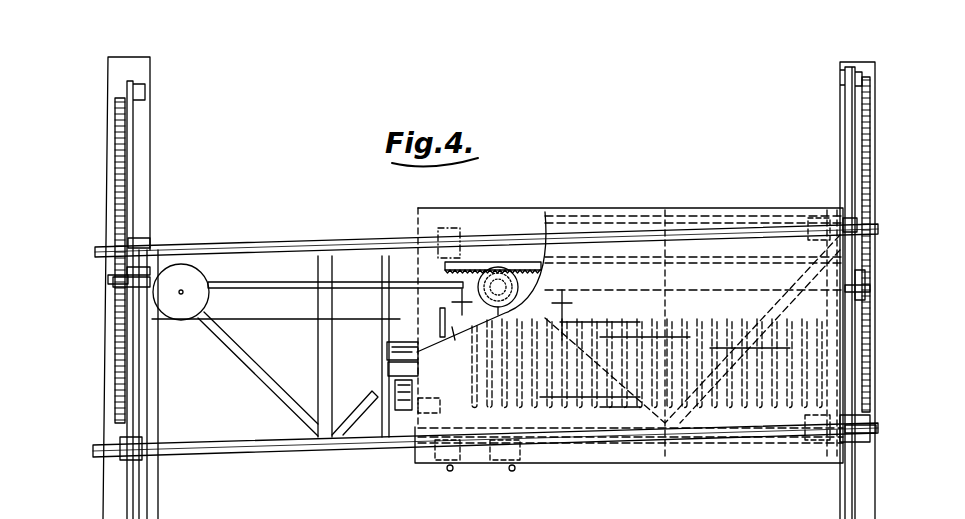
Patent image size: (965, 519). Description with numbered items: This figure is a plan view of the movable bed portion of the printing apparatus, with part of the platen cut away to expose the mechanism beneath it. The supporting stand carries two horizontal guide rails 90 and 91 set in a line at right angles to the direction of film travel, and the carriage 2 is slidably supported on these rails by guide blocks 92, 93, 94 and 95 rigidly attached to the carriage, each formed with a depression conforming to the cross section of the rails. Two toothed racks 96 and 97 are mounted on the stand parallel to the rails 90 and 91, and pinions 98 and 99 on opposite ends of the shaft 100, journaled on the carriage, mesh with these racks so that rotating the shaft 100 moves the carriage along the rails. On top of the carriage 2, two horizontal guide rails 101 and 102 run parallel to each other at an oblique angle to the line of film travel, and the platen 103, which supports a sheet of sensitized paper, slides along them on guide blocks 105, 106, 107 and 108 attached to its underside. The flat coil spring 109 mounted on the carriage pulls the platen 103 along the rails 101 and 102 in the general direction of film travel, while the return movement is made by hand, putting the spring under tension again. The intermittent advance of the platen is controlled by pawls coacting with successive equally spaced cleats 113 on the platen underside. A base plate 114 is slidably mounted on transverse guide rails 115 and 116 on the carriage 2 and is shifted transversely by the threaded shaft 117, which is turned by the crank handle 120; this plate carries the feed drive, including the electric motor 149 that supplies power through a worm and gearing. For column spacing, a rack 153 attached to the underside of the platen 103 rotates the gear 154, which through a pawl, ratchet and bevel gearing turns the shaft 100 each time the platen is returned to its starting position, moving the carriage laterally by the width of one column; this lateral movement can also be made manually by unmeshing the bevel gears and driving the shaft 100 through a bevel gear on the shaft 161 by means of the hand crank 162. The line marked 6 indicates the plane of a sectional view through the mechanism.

The carriage 2 is at (226, 233).
The section line 6 is at (511, 314).
The horizontal guide rail 90 is at (132, 496).
The horizontal guide rail 91 is at (845, 501).
The guide block 92 is at (142, 462).
The guide block 93 is at (143, 240).
The guide block 94 is at (870, 439).
The guide block 95 is at (846, 222).
The toothed rack 96 is at (121, 164).
The toothed rack 97 is at (871, 342).
The pinion 98 is at (114, 279).
The pinion 99 is at (870, 289).
The shaft 100 is at (300, 286).
The horizontal guide rail 101 is at (230, 455).
The horizontal guide rail 102 is at (265, 243).
The platen 103 is at (742, 456).
The guide block 105 is at (452, 462).
The guide block 106 is at (450, 228).
The guide block 107 is at (815, 445).
The guide block 108 is at (805, 212).
The flat coil spring 109 is at (185, 300).
The cleats 113 is at (672, 320).
The base plate 114 is at (386, 368).
The transverse guide rail 115 is at (388, 348).
The transverse guide rail 116 is at (530, 427).
The threaded shaft 117 is at (439, 313).
The crank handle 120 is at (447, 470).
The electric motor 149 is at (398, 440).
The rack 153 is at (535, 264).
The gear 154 is at (489, 266).
The shaft 161 is at (508, 468).
The hand crank 162 is at (516, 467).